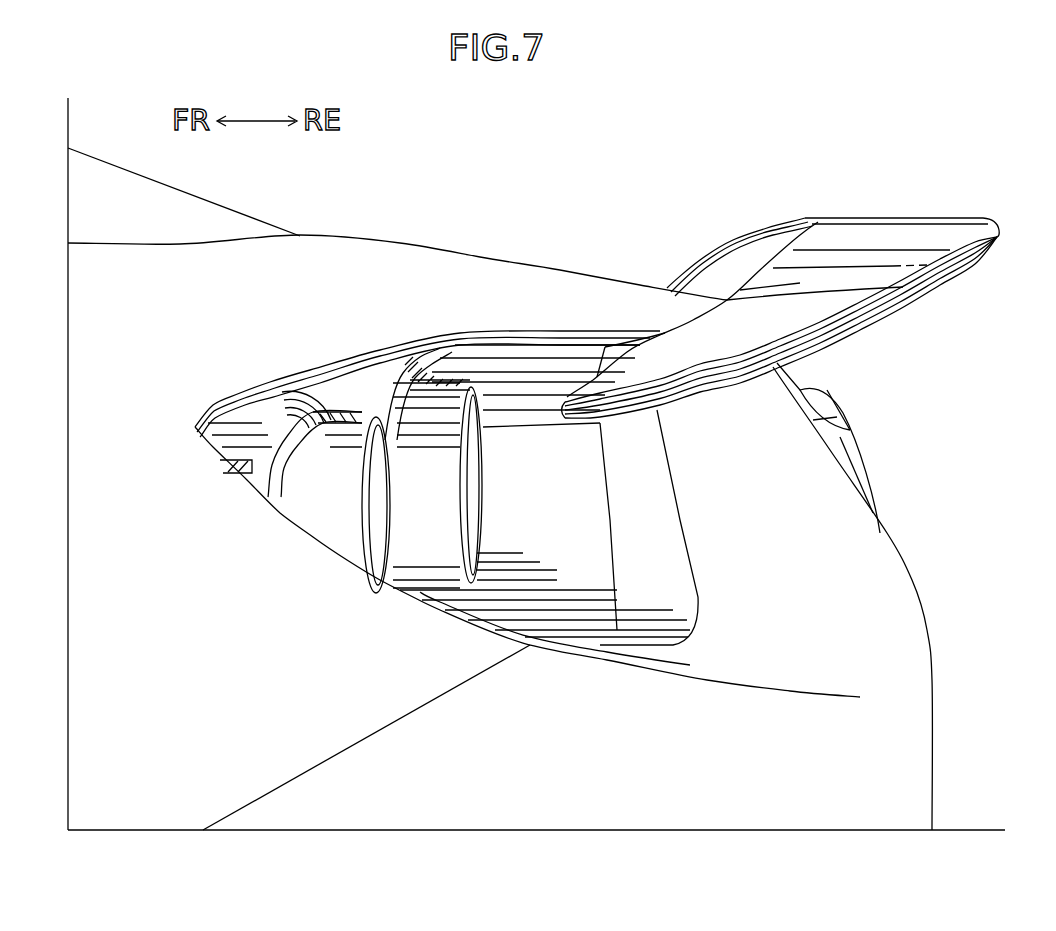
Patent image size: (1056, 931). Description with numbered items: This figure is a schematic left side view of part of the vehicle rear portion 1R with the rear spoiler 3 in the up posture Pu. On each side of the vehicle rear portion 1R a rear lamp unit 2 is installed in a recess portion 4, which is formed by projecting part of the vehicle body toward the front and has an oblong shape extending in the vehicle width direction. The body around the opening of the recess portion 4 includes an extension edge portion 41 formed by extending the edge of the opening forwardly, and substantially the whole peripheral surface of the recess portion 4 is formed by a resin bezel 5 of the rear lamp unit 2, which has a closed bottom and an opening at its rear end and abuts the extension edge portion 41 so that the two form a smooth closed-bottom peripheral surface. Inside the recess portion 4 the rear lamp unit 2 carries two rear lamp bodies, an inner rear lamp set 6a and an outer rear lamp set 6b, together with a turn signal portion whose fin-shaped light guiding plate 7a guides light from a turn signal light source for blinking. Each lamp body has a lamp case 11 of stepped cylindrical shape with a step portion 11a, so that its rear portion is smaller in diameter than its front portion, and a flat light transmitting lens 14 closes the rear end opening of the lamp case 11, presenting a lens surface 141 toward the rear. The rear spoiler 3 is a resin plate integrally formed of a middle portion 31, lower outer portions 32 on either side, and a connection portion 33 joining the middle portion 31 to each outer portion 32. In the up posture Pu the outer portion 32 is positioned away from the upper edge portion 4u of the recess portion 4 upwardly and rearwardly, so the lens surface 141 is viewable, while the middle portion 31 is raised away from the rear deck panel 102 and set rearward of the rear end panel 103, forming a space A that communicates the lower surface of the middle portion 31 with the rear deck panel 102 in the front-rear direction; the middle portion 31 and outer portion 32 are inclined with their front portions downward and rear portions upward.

The vehicle rear portion 1R is at (626, 222).
The rear lamp unit 2 is at (469, 468).
The rear spoiler 3 is at (798, 322).
The middle portion 31 is at (963, 220).
The outer portion 32 is at (793, 357).
The connection portion 33 is at (681, 273).
The recess portion 4 is at (466, 488).
The upper edge portion 4u is at (228, 400).
The extension edge portion 41 is at (700, 575).
The bezel 5 is at (604, 556).
The inner rear lamp set 6a is at (488, 462).
The outer rear lamp set 6b is at (391, 470).
The fin-shaped light guiding plate 7a is at (228, 478).
The lamp case 11 is at (330, 540).
The step portion 11a is at (280, 493).
The lens 14 is at (380, 510).
The lens surface 141 is at (378, 539).
The rear deck panel 102 is at (533, 270).
The rear end panel 103 is at (893, 535).
The space A is at (738, 275).
The up posture Pu is at (861, 205).